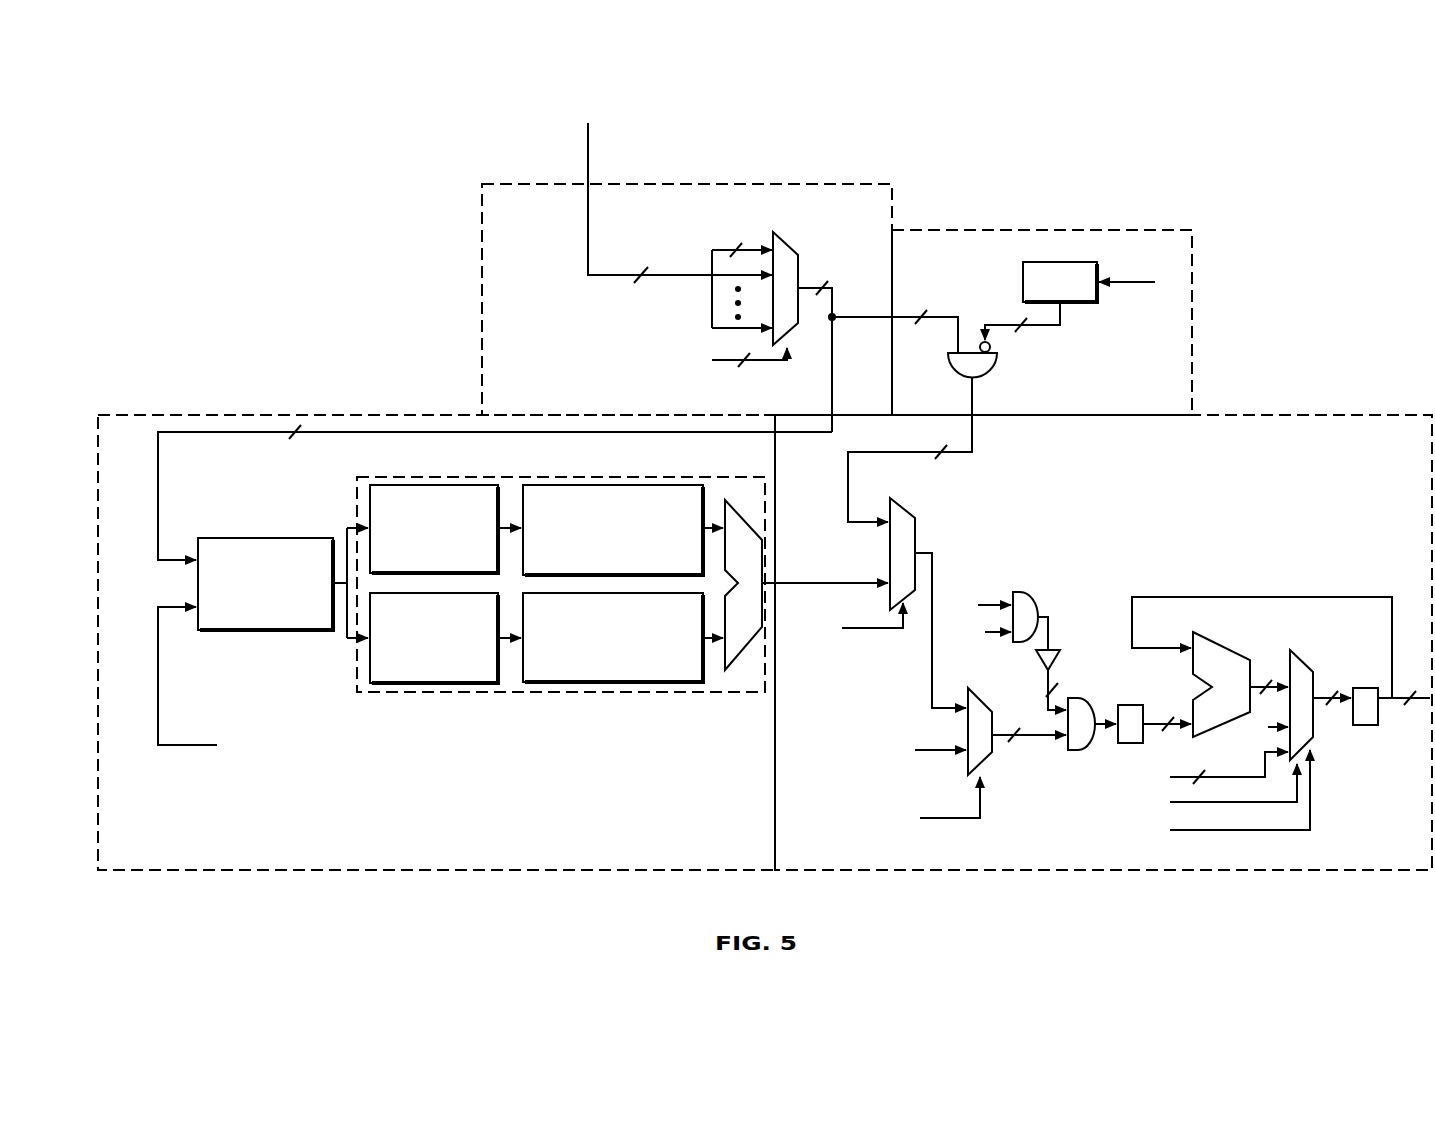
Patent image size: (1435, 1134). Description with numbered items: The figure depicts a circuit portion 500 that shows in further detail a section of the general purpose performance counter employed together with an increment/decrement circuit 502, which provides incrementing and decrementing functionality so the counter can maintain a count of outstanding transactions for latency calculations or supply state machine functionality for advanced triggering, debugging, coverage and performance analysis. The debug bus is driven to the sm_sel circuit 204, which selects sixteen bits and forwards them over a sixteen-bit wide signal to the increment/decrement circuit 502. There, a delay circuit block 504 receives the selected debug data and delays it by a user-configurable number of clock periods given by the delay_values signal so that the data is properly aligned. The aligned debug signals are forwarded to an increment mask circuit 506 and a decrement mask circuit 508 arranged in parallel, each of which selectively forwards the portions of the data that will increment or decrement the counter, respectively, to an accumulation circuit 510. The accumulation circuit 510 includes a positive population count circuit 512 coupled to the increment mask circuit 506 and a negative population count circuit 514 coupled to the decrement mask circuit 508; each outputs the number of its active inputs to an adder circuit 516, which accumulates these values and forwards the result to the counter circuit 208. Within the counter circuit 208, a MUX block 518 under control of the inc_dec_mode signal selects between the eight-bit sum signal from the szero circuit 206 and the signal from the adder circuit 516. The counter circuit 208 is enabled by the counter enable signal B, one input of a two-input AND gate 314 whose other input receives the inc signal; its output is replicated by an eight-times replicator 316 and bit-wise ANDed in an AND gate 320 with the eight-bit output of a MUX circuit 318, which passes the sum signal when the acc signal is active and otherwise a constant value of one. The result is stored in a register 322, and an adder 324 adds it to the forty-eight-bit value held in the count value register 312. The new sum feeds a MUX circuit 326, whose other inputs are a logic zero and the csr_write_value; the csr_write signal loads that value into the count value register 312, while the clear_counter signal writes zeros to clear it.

The circuit portion 500 is at (1302, 198).
The sm_sel circuit 204 is at (651, 308).
The szero circuit 206 is at (1046, 376).
The counter circuit 208 is at (1103, 627).
The increment/decrement circuit 502 is at (493, 625).
The delay circuit block 504 is at (254, 566).
The increment mask circuit 506 is at (419, 511).
The decrement mask circuit 508 is at (419, 659).
The accumulation circuit 510 is at (579, 591).
The positive population count circuit 512 is at (600, 512).
The negative population count circuit 514 is at (600, 659).
The adder circuit 516 is at (748, 522).
The MUX block 518 is at (924, 544).
The AND gate 314 is at (1044, 604).
The replicator 316 is at (1078, 647).
The MUX circuit 318 is at (999, 727).
The AND gate 320 is at (1094, 709).
The register 322 is at (1149, 706).
The adder 324 is at (1232, 676).
The MUX circuit 326 is at (1324, 690).
The count value register 312 is at (1387, 726).